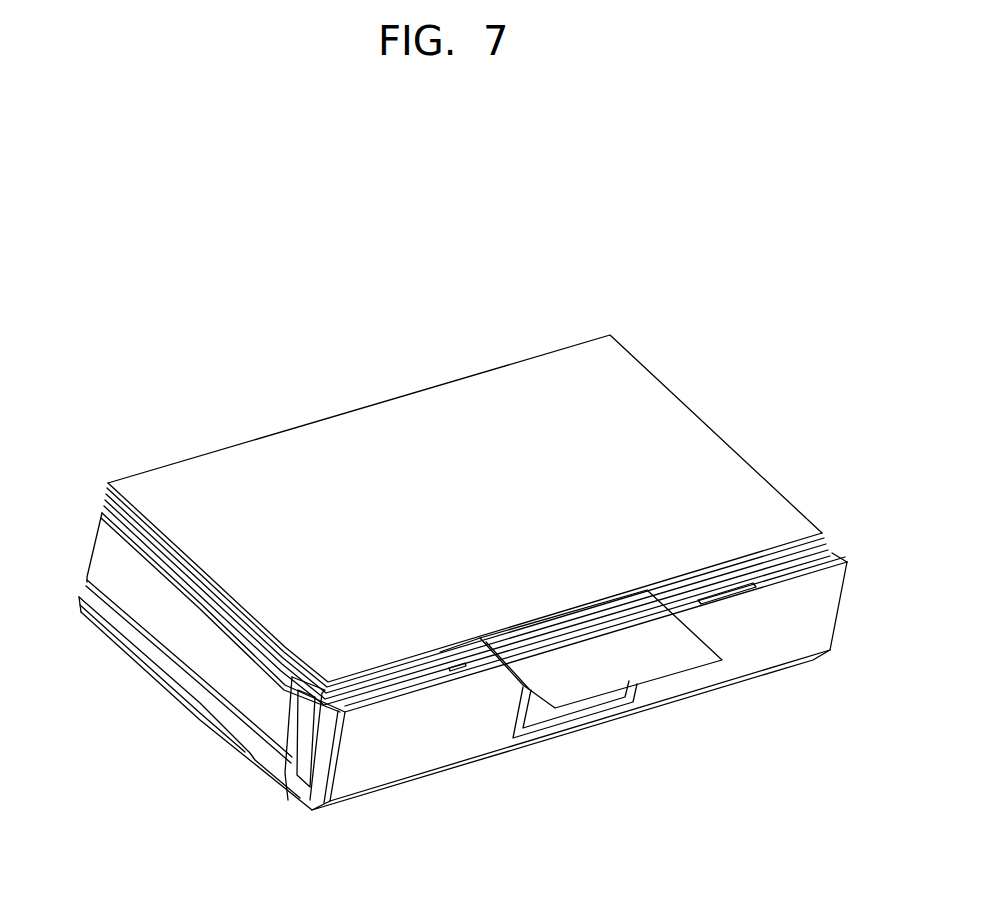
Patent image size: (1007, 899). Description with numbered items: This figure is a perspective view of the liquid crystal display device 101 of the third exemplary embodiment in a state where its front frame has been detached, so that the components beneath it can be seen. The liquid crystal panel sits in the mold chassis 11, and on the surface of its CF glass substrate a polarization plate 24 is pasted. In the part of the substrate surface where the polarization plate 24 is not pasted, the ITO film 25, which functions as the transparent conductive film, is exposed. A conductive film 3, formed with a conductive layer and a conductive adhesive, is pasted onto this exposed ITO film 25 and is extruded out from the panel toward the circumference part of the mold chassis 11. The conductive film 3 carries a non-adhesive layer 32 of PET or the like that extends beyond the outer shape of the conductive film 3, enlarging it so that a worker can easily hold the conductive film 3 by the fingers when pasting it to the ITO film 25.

The liquid crystal display device 101 is at (718, 347).
The polarization plate 24 is at (700, 520).
The ITO film 25 is at (733, 570).
The mold chassis 11 is at (760, 632).
The conductive film 3 is at (590, 623).
The non-adhesive layer 32 is at (667, 653).